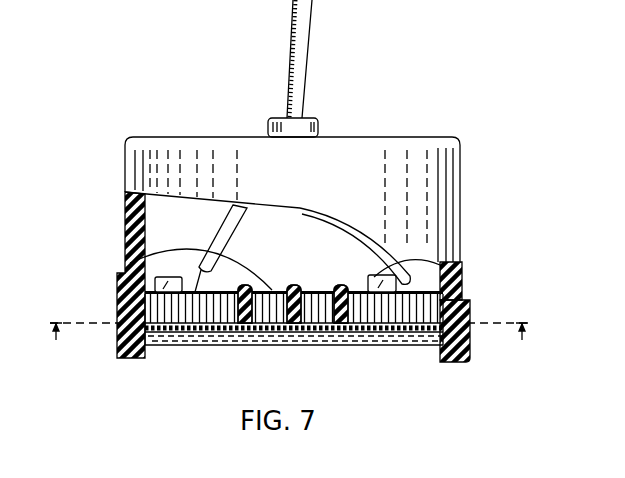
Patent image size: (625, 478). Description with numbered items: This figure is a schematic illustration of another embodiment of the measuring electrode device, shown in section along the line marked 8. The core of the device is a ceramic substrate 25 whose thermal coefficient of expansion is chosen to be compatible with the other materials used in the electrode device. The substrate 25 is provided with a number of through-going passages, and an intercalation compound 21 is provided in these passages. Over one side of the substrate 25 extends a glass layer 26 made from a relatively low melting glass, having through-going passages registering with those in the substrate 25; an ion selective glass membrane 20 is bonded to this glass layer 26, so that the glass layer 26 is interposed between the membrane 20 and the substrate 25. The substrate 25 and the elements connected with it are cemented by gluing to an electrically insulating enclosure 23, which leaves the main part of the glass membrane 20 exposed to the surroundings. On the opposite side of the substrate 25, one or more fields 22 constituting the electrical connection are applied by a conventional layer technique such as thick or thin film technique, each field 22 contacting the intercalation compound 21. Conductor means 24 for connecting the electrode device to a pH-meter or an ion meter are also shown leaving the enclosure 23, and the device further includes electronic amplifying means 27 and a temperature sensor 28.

The conductor means 24 is at (293, 44).
The electrically insulating enclosure 23 is at (437, 225).
The electronic amplifying means 27 is at (458, 265).
The ceramic substrate 25 is at (465, 303).
The field 22 is at (130, 263).
The temperature sensor 28 is at (119, 302).
The intercalation compound 21 is at (331, 335).
The ion selective glass membrane 20 is at (371, 330).
The glass layer 26 is at (420, 325).
The section line 8- 8 is at (288, 349).